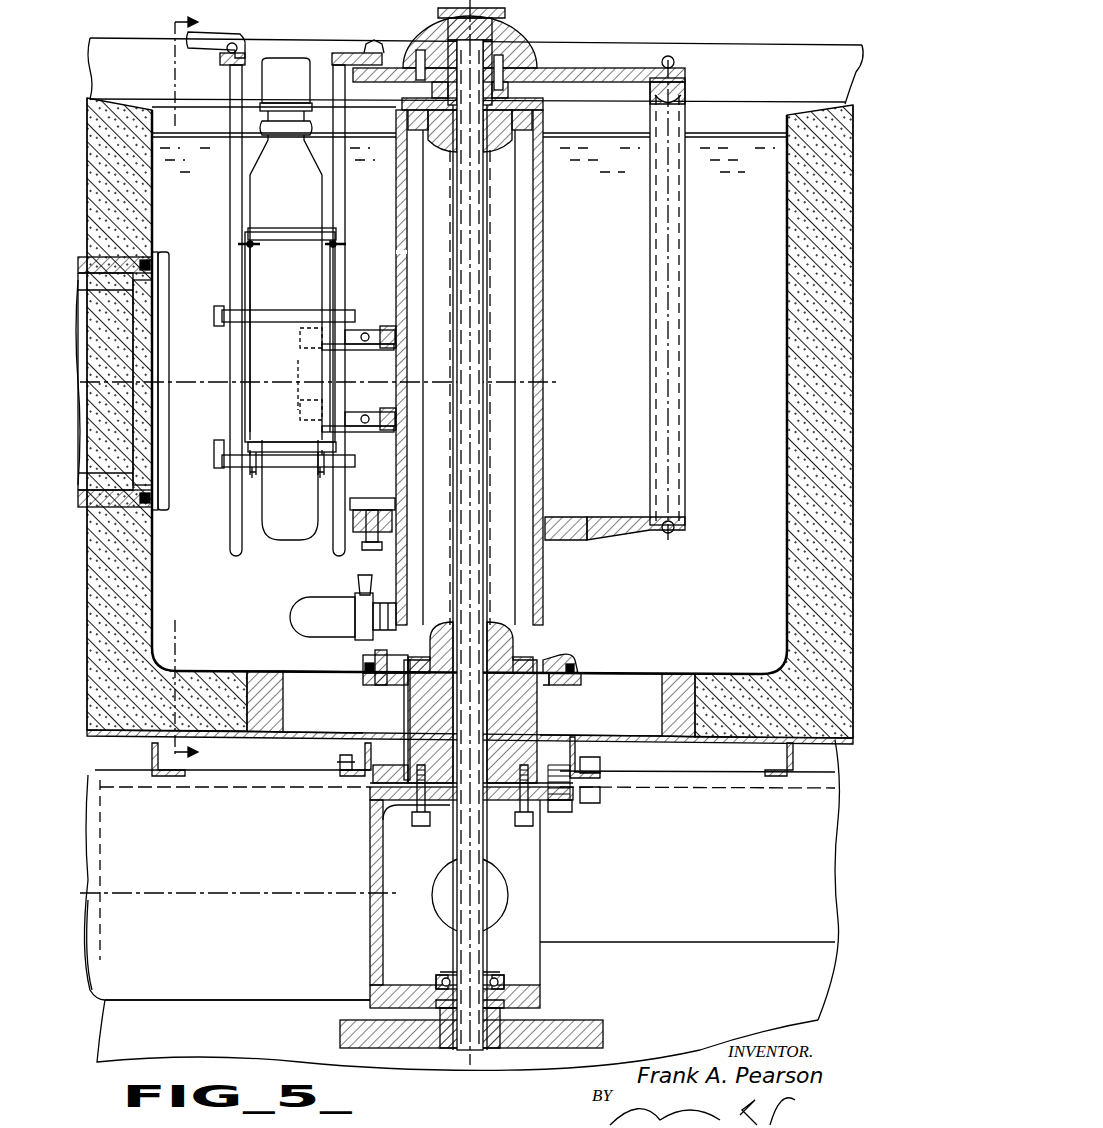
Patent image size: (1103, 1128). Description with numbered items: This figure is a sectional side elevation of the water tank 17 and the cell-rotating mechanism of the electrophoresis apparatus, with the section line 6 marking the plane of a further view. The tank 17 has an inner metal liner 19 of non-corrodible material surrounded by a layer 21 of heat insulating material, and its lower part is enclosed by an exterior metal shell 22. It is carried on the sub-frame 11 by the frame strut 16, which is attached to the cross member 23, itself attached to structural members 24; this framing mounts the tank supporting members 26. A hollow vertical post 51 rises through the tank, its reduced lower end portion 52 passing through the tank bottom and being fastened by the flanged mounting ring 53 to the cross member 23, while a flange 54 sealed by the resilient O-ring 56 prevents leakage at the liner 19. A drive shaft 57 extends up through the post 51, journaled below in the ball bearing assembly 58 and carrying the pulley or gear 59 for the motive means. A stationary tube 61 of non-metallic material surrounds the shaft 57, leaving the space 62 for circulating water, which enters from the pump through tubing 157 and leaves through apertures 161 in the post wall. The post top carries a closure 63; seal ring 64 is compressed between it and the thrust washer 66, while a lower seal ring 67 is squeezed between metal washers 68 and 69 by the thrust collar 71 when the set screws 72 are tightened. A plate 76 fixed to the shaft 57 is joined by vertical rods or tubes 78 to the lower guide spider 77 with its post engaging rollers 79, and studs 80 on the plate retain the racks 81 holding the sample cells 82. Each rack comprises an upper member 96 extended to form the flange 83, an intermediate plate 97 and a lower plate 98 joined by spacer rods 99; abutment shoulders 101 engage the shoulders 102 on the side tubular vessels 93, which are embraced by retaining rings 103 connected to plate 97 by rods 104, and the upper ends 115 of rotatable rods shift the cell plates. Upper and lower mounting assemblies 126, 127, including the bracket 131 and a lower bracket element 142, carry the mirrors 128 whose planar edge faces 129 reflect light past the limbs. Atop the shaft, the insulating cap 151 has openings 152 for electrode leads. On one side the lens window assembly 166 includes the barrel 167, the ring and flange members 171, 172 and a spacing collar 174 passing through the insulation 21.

The section line 6- 6 is at (178, 385).
The sub-frame 11 is at (262, 1003).
The frame strut 16 is at (190, 1003).
The water tank 17 is at (786, 476).
The inner metal liner 19 is at (786, 512).
The layer of heat insulating material 21 is at (786, 448).
The exterior metal shell 22 is at (238, 729).
The cross member 23 is at (370, 936).
The structural members 24 is at (680, 930).
The tank supporting members 26 is at (176, 773).
The vertical post 51 is at (543, 436).
The lower end portion 52 is at (406, 716).
The flanged mounting ring 53 is at (374, 786).
The flange 54 is at (570, 660).
The resilient O-ring 56 is at (576, 664).
The drive shaft 57 is at (490, 264).
The ball bearing assembly 58 is at (500, 975).
The pulley or gear 59 is at (560, 1020).
The stationary tube 61 is at (510, 308).
The space 62 is at (527, 353).
The closure 63 is at (542, 97).
The seal ring 64 is at (533, 116).
The thrust washer 66 is at (520, 128).
The seal ring 67 is at (535, 657).
The metal washer 68 is at (528, 657).
The metal washer 69 is at (403, 694).
The thrust collar 71 is at (525, 724).
The set screws 72 is at (452, 797).
The plate 76 is at (575, 68).
The lower guide spider 77 is at (600, 517).
The vertical rods or tubes 78 is at (680, 296).
The post engaging rollers 79 is at (378, 498).
The studs 80 is at (375, 41).
The racks 81 is at (224, 112).
The sample cells 82 is at (312, 256).
The flange 83 is at (352, 53).
The side tubular vessels 93 is at (262, 189).
The upper member 96 is at (222, 62).
The intermediate plate 97 is at (214, 314).
The lower plate 98 is at (222, 461).
The spacer rods 99 is at (230, 166).
The adjustable abutment shoulders 101 is at (260, 446).
The shoulders 102 is at (276, 440).
The retaining rings 103 is at (258, 230).
The rods 104 is at (238, 245).
The upper ends of the rods 115 is at (213, 32).
The upper mounting assembly 126 is at (364, 352).
The lower mounting assembly 127 is at (380, 412).
The mirrors 128 is at (302, 390).
The planar edge faces 129 is at (302, 354).
The bracket 131 is at (378, 330).
The bracket plate 142 is at (378, 432).
The insulating hub or cap 151 is at (512, 26).
The openings 152 is at (438, 30).
The tubing 157 is at (298, 604).
The apertures 161 is at (404, 280).
The lens window assembly 166 is at (170, 378).
The barrel 167 is at (115, 433).
The ring member 171 is at (140, 293).
The flange member 172 is at (155, 276).
The spacing collar 174 is at (130, 500).